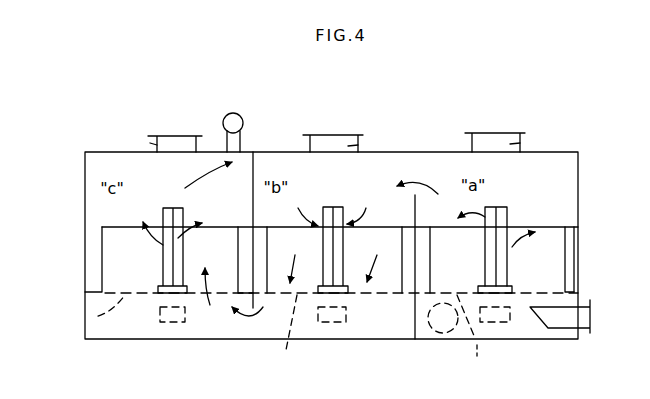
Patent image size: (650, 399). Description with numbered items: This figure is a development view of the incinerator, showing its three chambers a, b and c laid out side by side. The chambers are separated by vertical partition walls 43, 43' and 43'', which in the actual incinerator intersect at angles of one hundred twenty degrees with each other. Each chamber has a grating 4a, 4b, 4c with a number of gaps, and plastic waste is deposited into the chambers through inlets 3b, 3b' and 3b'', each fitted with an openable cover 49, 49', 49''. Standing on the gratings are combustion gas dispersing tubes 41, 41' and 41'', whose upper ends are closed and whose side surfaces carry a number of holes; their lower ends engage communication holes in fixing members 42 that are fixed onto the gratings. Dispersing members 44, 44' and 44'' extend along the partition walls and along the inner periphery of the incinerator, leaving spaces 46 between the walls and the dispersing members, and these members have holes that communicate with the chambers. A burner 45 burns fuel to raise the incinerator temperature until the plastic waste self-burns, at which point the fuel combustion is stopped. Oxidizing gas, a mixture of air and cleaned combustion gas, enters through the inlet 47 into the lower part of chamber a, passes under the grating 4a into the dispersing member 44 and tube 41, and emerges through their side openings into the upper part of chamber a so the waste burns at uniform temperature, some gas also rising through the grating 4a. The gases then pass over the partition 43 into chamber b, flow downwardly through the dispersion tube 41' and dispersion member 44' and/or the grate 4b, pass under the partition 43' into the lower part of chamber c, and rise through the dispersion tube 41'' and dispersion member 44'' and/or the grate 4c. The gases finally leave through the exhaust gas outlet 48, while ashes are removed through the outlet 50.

The vertical partition wall 43'' is at (333, 242).
The vertical partition wall 43' is at (271, 230).
The vertical partition wall 43 is at (429, 267).
The combustion gas dispersing tube 41'' is at (167, 231).
The combustion gas dispersing tube 41' is at (333, 230).
The combustion gas dispersing tube 41 is at (548, 231).
The fixing member 42 is at (510, 290).
The openable cover 49'' is at (175, 123).
The openable cover 49' is at (333, 123).
The openable cover 49 is at (495, 123).
The inlet 3b'' is at (138, 120).
The inlet 3b' is at (370, 120).
The inlet 3b is at (526, 119).
The exhaust gas outlet 48 is at (233, 113).
The dispersing member 44'' is at (147, 260).
The dispersing member 44' is at (334, 260).
The dispersing member 44 is at (519, 252).
The space 46 is at (575, 249).
The burner 45 is at (585, 328).
The oxidizing gas inlet 47 is at (441, 325).
The ash outlet 50 is at (176, 323).
The grating 4a is at (478, 361).
The grating 4b is at (283, 336).
The grating 4c is at (98, 316).